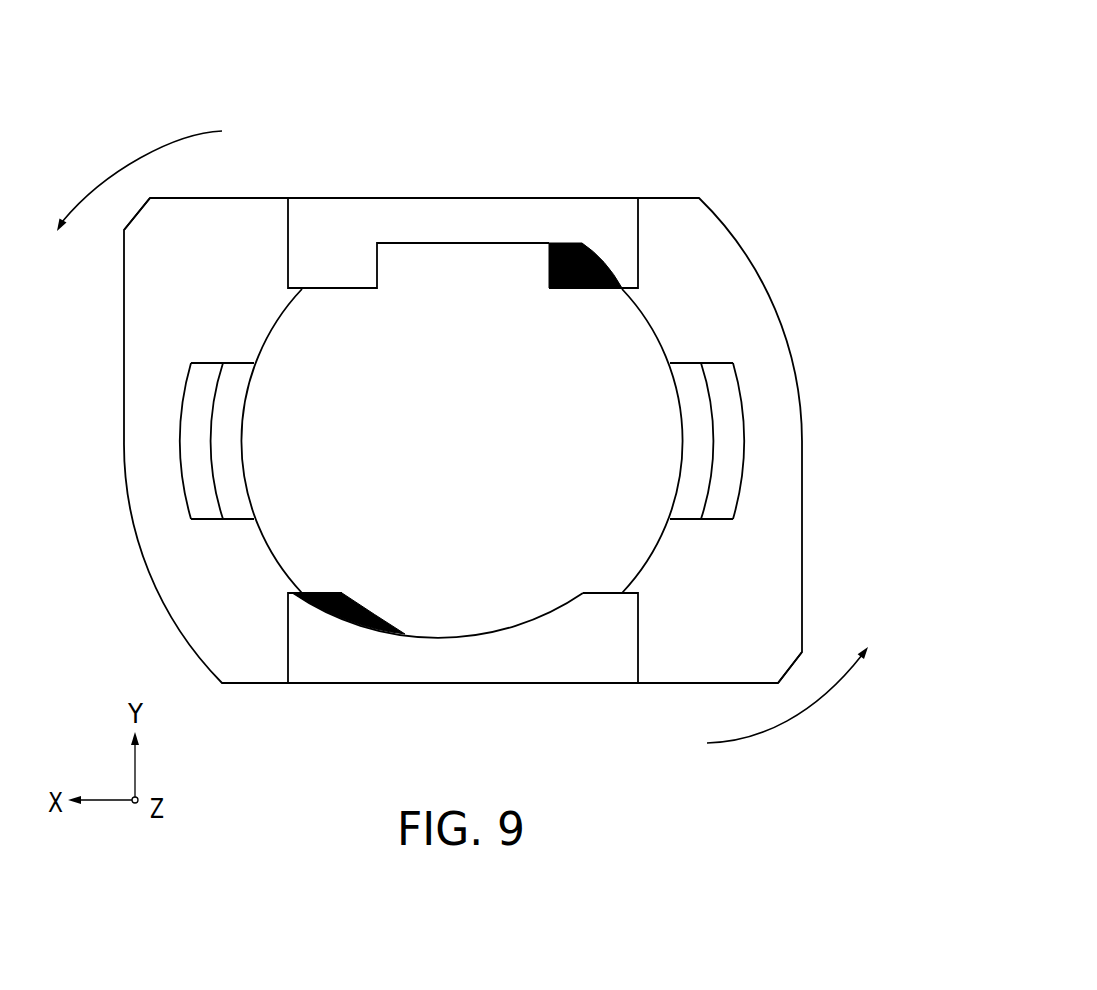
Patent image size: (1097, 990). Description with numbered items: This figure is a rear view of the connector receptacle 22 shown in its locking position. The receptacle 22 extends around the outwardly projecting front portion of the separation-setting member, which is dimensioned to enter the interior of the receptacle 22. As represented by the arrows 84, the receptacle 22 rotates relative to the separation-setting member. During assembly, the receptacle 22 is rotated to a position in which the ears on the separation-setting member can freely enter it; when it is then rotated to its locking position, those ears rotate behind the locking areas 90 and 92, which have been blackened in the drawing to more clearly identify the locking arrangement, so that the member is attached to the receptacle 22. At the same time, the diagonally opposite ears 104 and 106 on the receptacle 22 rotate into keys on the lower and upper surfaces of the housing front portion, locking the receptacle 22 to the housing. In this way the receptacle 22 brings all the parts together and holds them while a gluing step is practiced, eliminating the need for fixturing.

The connector receptacle 22 is at (705, 48).
The arrows 84 is at (127, 148).
The locking area 90 is at (582, 255).
The locking area 92 is at (350, 623).
The ear 104 is at (797, 668).
The ear 106 is at (138, 212).